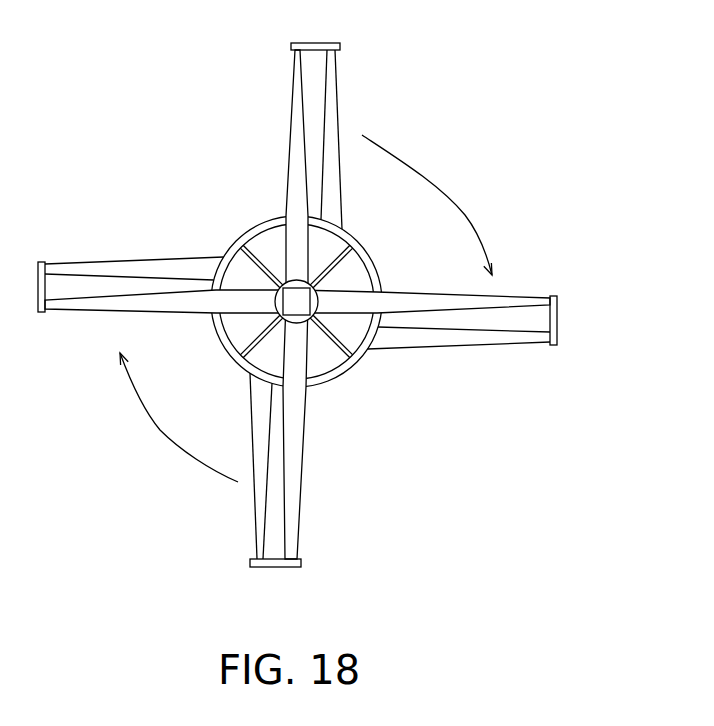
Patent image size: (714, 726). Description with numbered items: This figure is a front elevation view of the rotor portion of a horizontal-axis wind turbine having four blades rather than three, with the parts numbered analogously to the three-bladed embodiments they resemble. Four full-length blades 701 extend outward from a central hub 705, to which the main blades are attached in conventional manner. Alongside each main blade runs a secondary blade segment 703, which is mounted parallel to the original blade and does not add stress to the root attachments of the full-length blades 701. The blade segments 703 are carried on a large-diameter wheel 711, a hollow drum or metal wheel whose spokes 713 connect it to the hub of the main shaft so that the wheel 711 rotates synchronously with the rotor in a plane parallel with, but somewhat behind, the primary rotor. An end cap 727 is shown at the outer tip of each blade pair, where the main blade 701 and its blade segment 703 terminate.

The full-length blade 701 is at (297, 125).
The blade segment 703 is at (337, 108).
The hub 705 is at (340, 285).
The wheel 711 is at (247, 236).
The spokes 713 is at (333, 348).
The blade end cap 727 is at (291, 46).